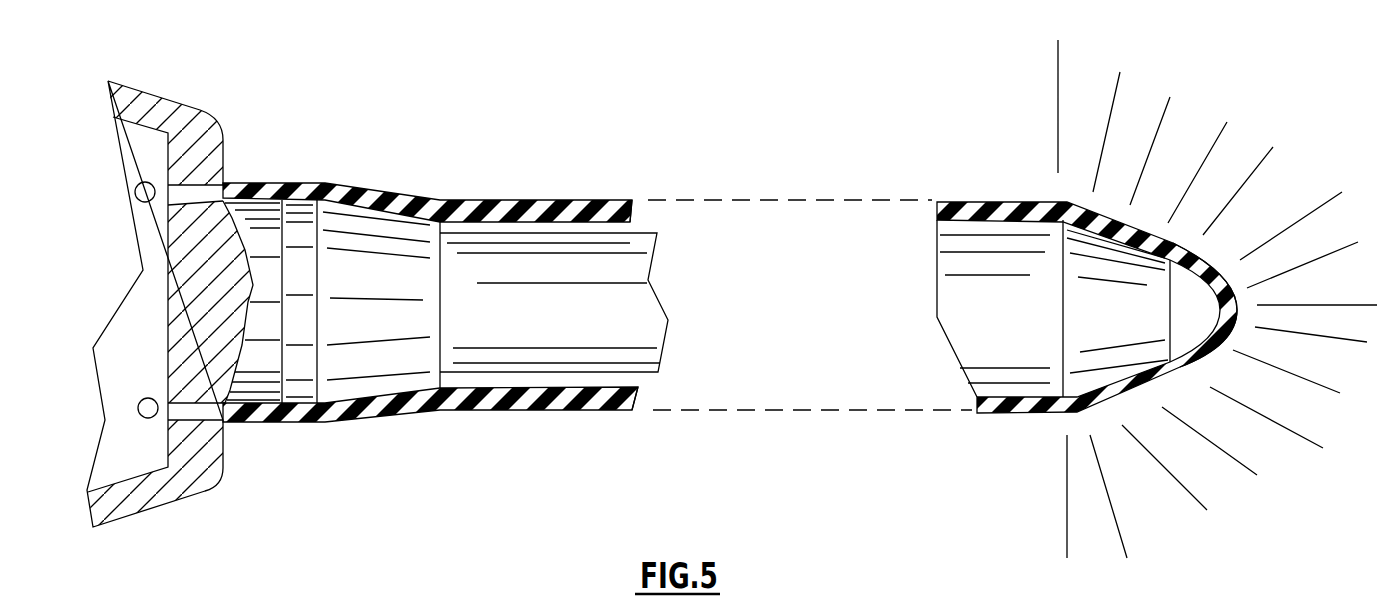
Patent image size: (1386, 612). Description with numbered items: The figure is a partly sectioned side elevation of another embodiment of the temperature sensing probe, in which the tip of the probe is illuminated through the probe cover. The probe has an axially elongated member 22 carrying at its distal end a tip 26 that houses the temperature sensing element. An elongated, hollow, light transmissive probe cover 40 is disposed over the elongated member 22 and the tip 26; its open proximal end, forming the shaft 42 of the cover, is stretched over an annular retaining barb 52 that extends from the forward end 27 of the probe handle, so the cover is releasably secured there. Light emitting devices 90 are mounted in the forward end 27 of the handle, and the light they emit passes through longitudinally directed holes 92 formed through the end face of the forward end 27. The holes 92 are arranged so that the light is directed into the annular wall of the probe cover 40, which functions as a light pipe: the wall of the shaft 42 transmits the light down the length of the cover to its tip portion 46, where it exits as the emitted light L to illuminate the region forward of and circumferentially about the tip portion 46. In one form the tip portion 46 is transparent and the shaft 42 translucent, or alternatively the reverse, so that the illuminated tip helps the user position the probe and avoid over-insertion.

The elongated member 22 is at (540, 375).
The tip 26 is at (1085, 365).
The forward end 27 is at (185, 500).
The probe cover 40 is at (428, 417).
The open proximal end 42 is at (633, 413).
The tip portion 46 is at (1177, 377).
The annular retaining barb 52 is at (345, 383).
The light emitting devices 90 is at (135, 189).
The holes 92 is at (190, 198).
The light rays L is at (1178, 480).